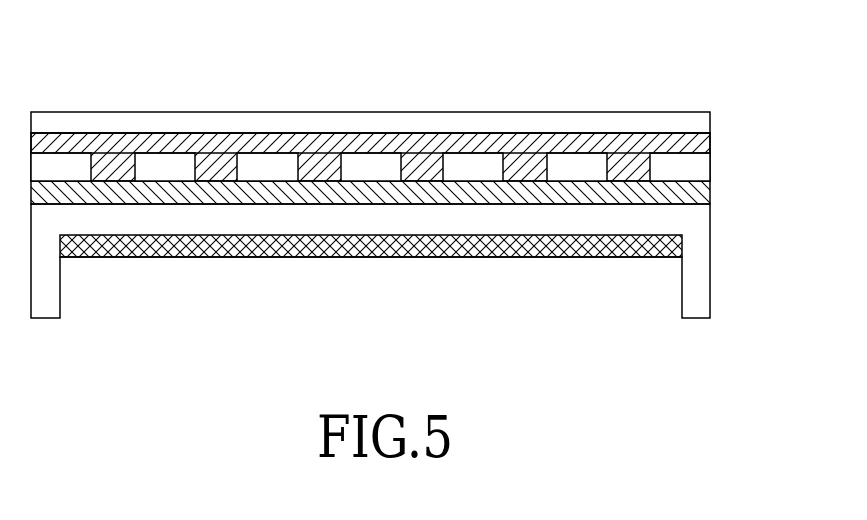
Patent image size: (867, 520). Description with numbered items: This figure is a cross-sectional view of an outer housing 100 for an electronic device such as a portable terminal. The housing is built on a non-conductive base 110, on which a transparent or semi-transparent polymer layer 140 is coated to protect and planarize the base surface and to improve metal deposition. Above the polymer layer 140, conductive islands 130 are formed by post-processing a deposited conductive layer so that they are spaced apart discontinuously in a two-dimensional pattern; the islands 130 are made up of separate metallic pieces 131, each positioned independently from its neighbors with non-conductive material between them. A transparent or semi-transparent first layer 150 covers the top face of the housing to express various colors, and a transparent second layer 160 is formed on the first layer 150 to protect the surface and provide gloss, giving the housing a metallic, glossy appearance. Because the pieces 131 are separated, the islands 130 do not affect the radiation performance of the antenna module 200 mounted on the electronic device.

The outer housing 100 is at (62, 26).
The base 110 is at (710, 274).
The islands 130 is at (401, 97).
The pieces 131 is at (600, 57).
The polymer layer 140 is at (710, 189).
The first layer 150 is at (710, 139).
The second layer 160 is at (688, 120).
The antenna module 200 is at (365, 248).